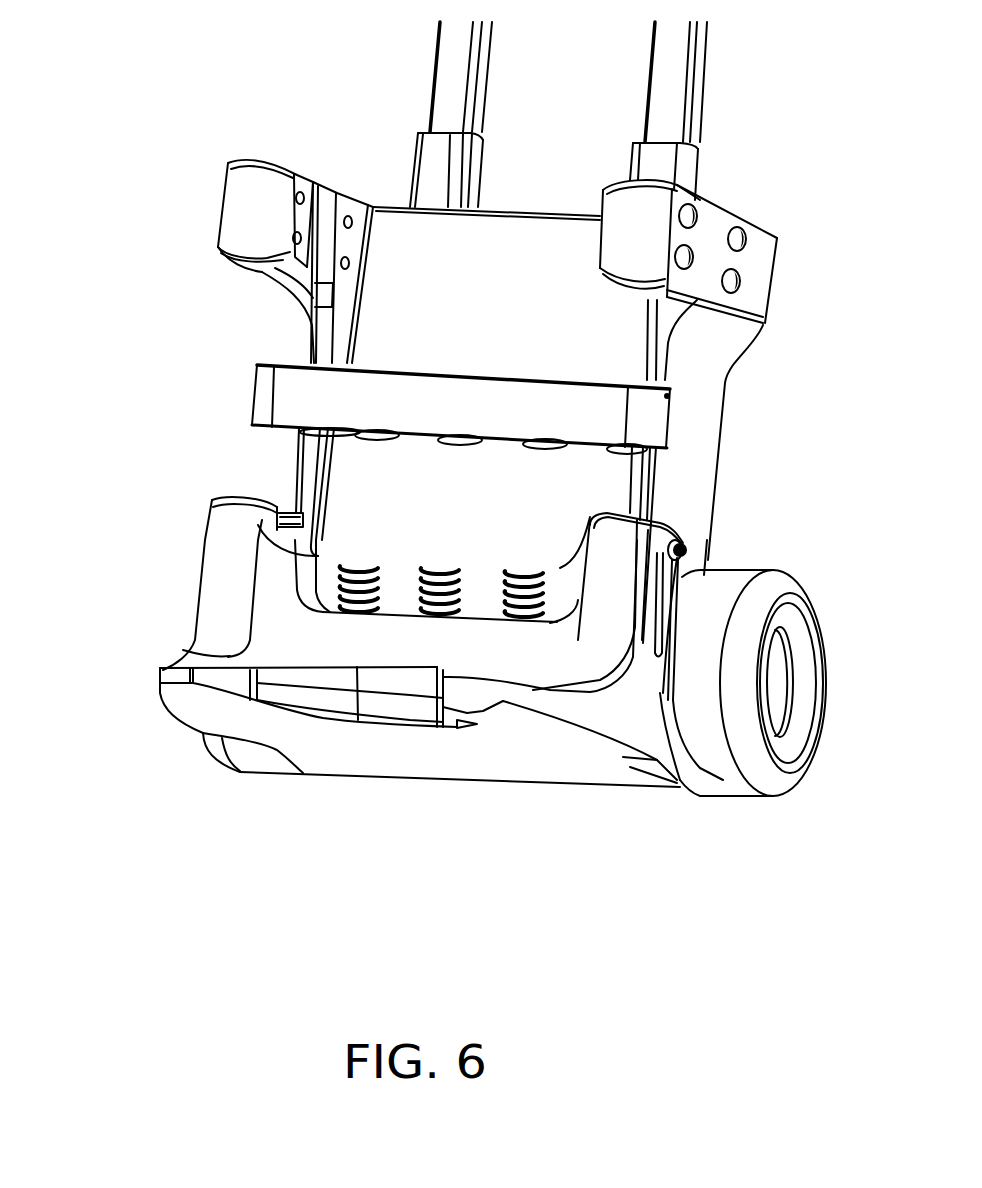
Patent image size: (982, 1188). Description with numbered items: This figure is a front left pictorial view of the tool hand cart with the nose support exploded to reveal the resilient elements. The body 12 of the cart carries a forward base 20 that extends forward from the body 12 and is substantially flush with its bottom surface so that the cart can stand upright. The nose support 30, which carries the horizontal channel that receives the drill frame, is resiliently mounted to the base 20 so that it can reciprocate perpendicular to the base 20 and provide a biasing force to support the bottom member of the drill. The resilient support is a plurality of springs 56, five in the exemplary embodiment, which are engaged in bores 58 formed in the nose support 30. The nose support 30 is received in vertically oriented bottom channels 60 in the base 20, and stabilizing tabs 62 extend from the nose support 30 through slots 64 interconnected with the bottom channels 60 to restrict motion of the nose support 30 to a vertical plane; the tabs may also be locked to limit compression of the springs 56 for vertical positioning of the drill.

The body 12 is at (690, 452).
The forward base 20 is at (505, 703).
The nose support 30 is at (403, 405).
The springs 56 is at (330, 603).
The bores 58 is at (370, 442).
The bottom channels 60 is at (300, 517).
The stabilizing tabs 62 is at (683, 557).
The slots 64 is at (690, 782).